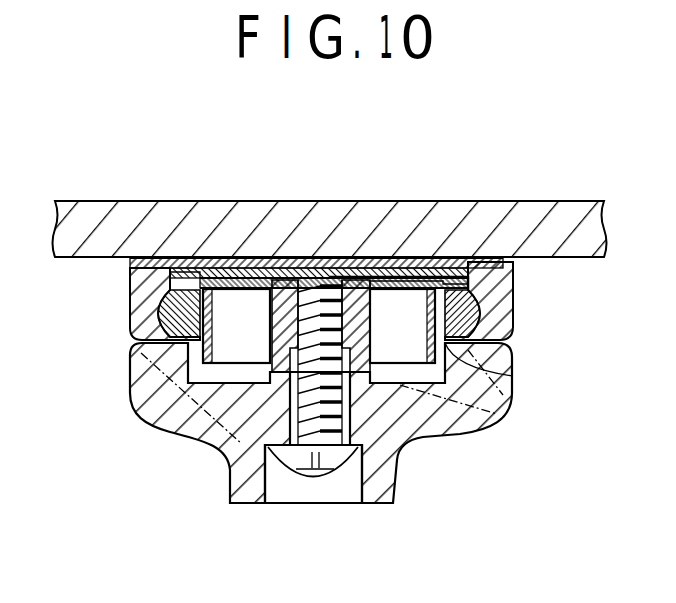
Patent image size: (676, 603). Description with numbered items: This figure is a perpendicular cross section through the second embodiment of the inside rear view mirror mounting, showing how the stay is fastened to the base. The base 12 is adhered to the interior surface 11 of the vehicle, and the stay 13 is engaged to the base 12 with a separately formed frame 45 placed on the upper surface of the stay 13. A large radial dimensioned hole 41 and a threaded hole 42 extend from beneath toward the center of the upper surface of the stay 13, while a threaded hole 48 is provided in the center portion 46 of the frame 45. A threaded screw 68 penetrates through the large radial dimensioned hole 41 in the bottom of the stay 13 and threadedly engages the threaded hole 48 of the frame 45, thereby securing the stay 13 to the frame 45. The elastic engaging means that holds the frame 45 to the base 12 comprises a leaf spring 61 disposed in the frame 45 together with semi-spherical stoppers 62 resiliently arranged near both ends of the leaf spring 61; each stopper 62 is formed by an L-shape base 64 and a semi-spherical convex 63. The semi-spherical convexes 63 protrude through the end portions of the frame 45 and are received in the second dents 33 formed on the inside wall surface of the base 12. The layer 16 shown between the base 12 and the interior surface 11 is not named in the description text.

The interior surface 11 is at (93, 258).
The base 12 is at (502, 284).
The stay 13 is at (490, 412).
The adhesive layer 16 is at (167, 257).
The second dent 33 is at (478, 308).
The large radial dimensioned hole 41 is at (277, 494).
The threaded hole 42 is at (313, 430).
The frame 45 is at (513, 376).
The center portion 46 is at (356, 328).
The threaded hole 48 is at (290, 258).
The leaf spring 61 is at (230, 344).
The semi-spherical stopper 62 is at (331, 206).
The semi-spherical convex 63 is at (453, 288).
The L-shape base 64 is at (403, 296).
The threaded screw 68 is at (311, 432).